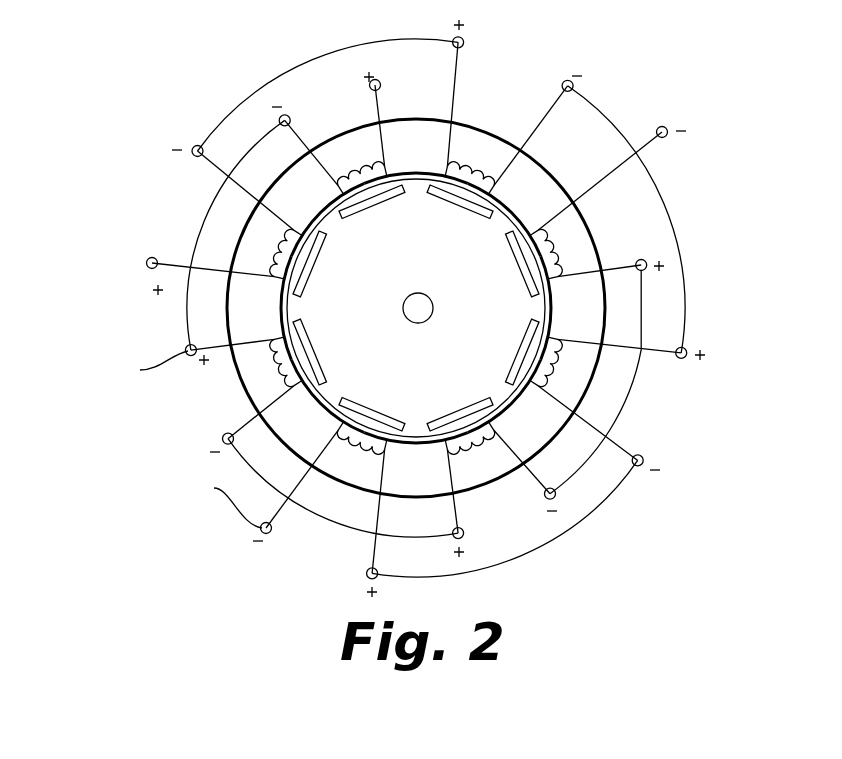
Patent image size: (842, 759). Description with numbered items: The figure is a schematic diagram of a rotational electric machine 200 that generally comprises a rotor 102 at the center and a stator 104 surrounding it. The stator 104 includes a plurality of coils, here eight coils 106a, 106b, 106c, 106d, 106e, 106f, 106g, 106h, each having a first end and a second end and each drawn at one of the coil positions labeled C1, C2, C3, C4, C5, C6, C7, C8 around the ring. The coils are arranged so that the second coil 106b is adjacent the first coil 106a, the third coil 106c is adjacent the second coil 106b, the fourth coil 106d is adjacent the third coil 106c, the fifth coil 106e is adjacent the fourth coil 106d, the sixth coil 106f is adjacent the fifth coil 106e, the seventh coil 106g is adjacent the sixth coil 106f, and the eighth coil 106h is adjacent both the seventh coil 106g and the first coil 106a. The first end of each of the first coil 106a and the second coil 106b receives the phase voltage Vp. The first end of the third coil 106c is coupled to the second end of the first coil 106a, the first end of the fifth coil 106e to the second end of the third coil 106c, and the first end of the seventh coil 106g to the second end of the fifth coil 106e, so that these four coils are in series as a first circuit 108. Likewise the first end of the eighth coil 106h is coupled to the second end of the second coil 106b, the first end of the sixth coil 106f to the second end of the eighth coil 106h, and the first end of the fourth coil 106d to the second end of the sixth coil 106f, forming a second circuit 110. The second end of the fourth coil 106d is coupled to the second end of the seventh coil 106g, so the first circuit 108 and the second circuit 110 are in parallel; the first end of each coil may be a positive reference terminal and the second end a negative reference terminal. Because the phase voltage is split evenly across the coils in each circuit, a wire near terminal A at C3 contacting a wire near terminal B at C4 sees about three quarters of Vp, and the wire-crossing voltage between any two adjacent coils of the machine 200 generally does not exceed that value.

The rotational electric machine 200 is at (633, 28).
The rotor 102 is at (367, 375).
The stator 104 is at (415, 119).
The first coil 106a is at (418, 158).
The second coil 106b is at (298, 230).
The third coil 106c is at (278, 333).
The fourth coil 106d is at (338, 425).
The fifth coil 106e is at (438, 448).
The sixth coil 106f is at (498, 412).
The seventh coil 106g is at (556, 277).
The eighth coil 106h is at (495, 187).
The first circuit 108 is at (200, 218).
The second circuit 110 is at (684, 262).
The coil C1 is at (361, 167).
The coil C2 is at (276, 253).
The coil C3 is at (275, 361).
The coil C4 is at (361, 450).
The coil C5 is at (471, 450).
The coil C6 is at (558, 362).
The coil C7 is at (557, 253).
The coil C8 is at (469, 167).